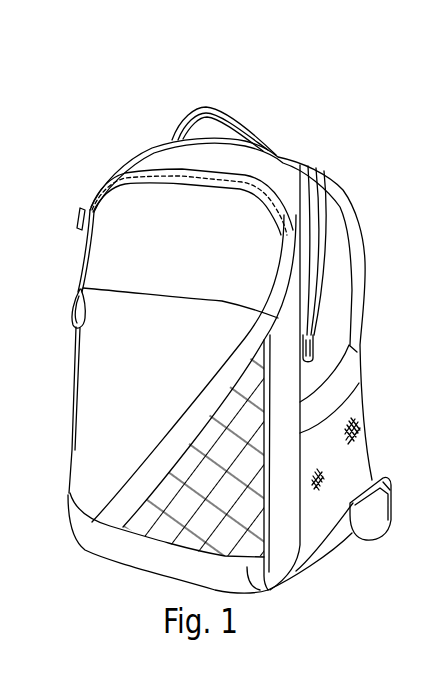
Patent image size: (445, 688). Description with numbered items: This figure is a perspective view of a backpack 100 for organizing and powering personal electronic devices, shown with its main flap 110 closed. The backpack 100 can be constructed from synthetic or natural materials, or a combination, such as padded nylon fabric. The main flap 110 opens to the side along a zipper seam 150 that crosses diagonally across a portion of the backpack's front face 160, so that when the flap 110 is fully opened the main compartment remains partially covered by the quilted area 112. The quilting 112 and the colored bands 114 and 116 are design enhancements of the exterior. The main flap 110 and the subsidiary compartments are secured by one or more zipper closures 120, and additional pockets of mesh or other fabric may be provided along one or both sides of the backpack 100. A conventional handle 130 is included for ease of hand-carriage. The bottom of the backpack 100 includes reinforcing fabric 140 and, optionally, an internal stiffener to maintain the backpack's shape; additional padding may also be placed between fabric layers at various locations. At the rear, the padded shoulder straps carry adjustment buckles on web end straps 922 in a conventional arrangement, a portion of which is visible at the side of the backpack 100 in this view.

The backpack 100 is at (302, 119).
The main flap 110 is at (252, 243).
The quilting 112 is at (184, 532).
The colored band 114 is at (240, 525).
The colored band 116 is at (105, 511).
The zipper closure 120 is at (88, 210).
The handle 130 is at (220, 106).
The reinforcing fabric 140 is at (269, 585).
The zipper seam 150 is at (188, 421).
The front face 160 is at (214, 300).
The web end strap 922 is at (362, 543).